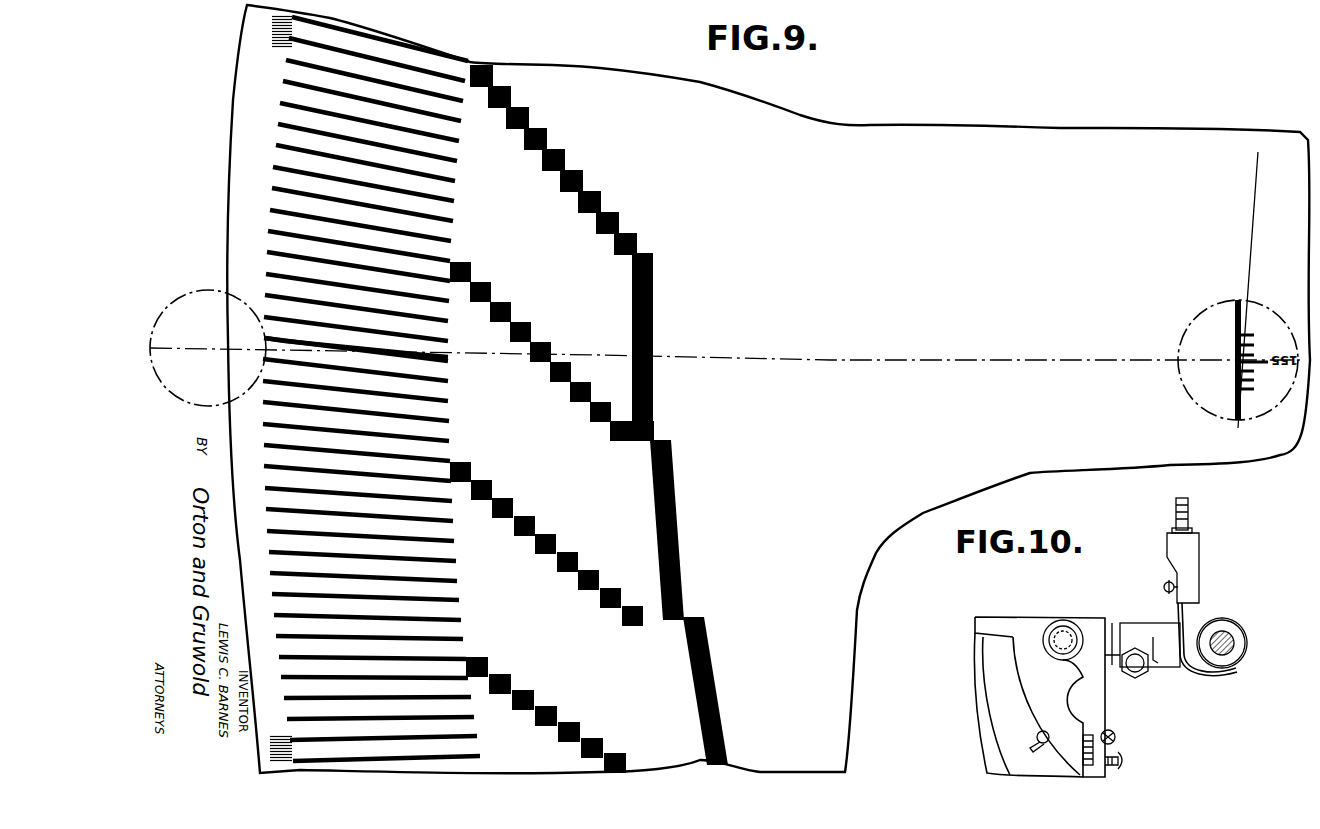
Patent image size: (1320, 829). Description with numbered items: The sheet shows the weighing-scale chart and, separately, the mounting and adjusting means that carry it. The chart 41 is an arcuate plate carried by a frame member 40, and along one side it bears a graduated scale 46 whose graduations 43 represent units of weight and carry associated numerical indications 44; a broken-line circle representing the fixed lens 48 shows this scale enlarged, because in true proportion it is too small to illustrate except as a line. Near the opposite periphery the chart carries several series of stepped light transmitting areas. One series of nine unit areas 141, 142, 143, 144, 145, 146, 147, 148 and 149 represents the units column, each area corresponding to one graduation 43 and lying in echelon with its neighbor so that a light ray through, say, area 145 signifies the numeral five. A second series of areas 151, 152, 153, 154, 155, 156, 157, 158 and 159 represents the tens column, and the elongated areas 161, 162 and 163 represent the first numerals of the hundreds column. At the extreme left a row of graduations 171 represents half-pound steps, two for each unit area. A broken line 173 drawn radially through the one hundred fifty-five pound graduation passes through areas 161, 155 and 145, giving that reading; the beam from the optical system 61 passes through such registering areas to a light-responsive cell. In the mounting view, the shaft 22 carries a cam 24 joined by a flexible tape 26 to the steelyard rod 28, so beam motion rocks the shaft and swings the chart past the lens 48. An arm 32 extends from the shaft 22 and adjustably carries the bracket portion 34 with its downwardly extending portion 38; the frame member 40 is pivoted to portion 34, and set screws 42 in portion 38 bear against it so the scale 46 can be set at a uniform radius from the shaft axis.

In FIG. 10, the shaft 22 is at (1232, 638).
In FIG. 10, the cam 24 is at (1225, 675).
In FIG. 10, the flexible tape 26 is at (1176, 613).
In FIG. 10, the steelyard rod 28 is at (1189, 503).
In FIG. 10, the arm 32 is at (1172, 668).
In FIG. 10, the adjusting bracket portion 34 is at (1113, 623).
In FIG. 10, the downwardly extending portion 38 is at (1098, 773).
In FIG. 10, the frame member 40 is at (1020, 625).
In FIG. 9, the chart 41 is at (1165, 135).
In FIG. 10, the chart 41 is at (978, 675).
In FIG. 10, the set screws 42 is at (1116, 737).
In FIG. 9, the graduated scale 46 is at (1255, 198).
In FIG. 10, the graduated scale 46 is at (992, 720).
In FIG. 9, the graduations 43 is at (1252, 338).
In FIG. 9, the numerical indications 44 is at (1280, 355).
In FIG. 9, the fixed lens 48 is at (1193, 399).
In FIG. 9, the optical system 61 is at (200, 292).
In FIG. 9, the unit light transmitting area 141 is at (266, 340).
In FIG. 9, the unit light transmitting area 142 is at (300, 345).
In FIG. 9, the unit light transmitting area 143 is at (313, 345).
In FIG. 9, the unit light transmitting area 144 is at (334, 350).
In FIG. 9, the unit light transmitting area 145 is at (353, 350).
In FIG. 9, the unit light transmitting area 146 is at (376, 353).
In FIG. 9, the unit light transmitting area 147 is at (394, 354).
In FIG. 9, the unit light transmitting area 148 is at (419, 356).
In FIG. 9, the unit light transmitting area 149 is at (435, 358).
In FIG. 9, the tens light transmitting area 151 is at (472, 275).
In FIG. 9, the tens light transmitting area 152 is at (492, 295).
In FIG. 9, the tens light transmitting area 153 is at (517, 305).
In FIG. 9, the tens light transmitting area 154 is at (532, 335).
In FIG. 9, the tens light transmitting area 155 is at (552, 355).
In FIG. 9, the tens light transmitting area 156 is at (572, 372).
In FIG. 9, the tens light transmitting area 157 is at (592, 392).
In FIG. 9, the tens light transmitting area 158 is at (590, 410).
In FIG. 9, the tens light transmitting area 159 is at (610, 431).
In FIG. 9, the elongated light transmitting area 161 is at (654, 318).
In FIG. 9, the elongated light transmitting area 162 is at (678, 535).
In FIG. 9, the elongated light transmitting area 163 is at (720, 710).
In FIG. 9, the half-pound graduations 171 is at (286, 736).
In FIG. 9, the broken line 173 is at (933, 362).